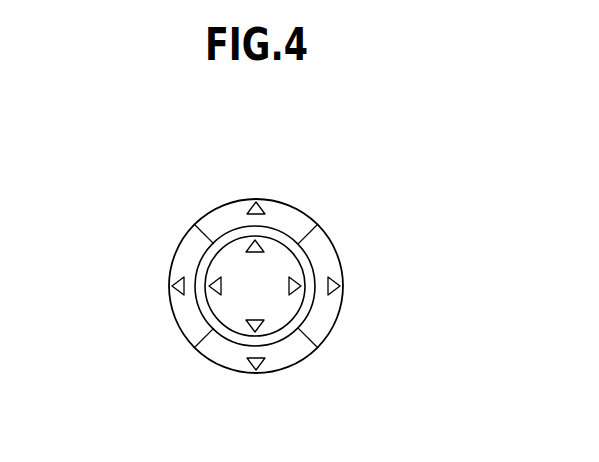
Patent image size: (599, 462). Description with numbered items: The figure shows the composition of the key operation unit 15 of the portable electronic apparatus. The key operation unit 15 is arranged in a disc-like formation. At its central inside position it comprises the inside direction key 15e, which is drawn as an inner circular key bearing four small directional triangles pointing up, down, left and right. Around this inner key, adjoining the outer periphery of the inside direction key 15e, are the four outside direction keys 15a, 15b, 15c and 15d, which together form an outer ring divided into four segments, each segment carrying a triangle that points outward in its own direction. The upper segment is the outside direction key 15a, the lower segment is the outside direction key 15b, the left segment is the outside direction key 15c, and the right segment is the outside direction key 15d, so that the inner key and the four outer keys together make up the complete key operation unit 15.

The key operation unit 15 is at (271, 275).
The outside direction key 15a is at (232, 211).
The outside direction key 15b is at (302, 355).
The outside direction key 15c is at (181, 256).
The outside direction key 15d is at (341, 302).
The inside direction key 15e is at (240, 306).